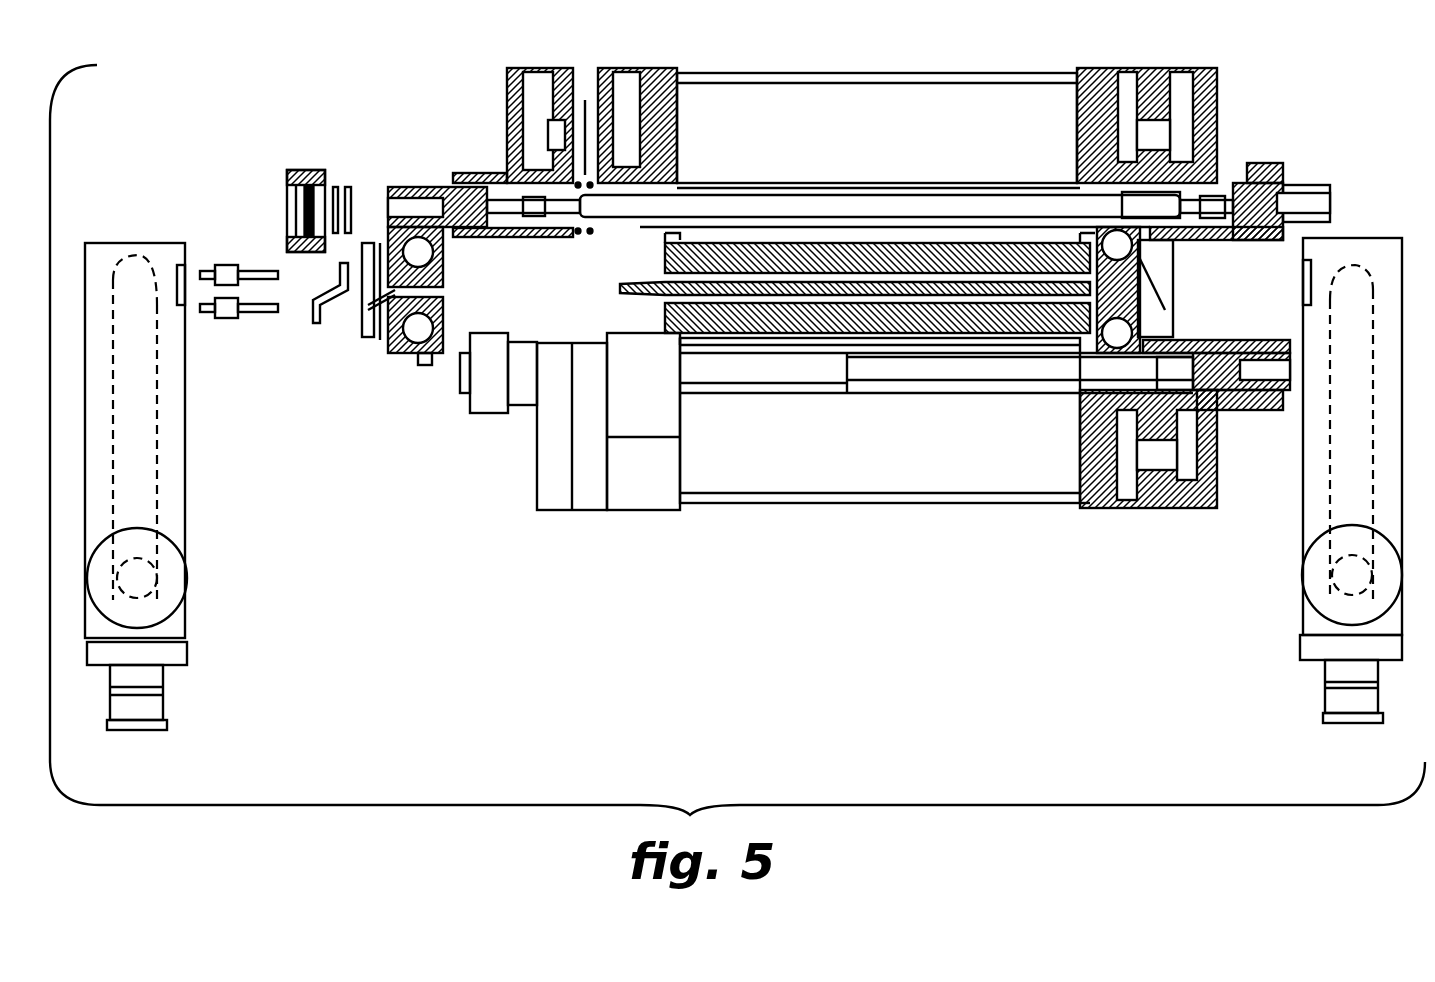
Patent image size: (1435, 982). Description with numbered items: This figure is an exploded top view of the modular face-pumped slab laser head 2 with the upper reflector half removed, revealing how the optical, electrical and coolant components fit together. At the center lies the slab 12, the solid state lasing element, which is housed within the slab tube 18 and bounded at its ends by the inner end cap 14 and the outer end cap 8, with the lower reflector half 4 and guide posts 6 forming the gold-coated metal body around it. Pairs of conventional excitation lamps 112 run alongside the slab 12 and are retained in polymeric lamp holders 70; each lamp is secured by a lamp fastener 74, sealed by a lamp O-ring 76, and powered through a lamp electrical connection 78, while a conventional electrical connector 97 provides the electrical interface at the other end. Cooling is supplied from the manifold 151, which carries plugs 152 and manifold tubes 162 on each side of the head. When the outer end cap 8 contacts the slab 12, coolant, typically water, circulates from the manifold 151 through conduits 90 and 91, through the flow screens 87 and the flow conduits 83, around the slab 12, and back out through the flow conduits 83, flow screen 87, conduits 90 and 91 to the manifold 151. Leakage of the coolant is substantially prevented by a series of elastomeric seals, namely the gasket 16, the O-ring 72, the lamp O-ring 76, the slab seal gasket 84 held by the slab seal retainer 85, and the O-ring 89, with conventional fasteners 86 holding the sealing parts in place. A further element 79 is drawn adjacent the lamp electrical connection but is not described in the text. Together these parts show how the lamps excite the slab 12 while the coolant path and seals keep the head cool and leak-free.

The modular face-pumped slab laser head 2 is at (737, 434).
The lower reflector half 4 is at (880, 488).
The guide posts 6 is at (880, 335).
The outer end cap 8 is at (402, 329).
The slab 12 is at (802, 284).
The inner end cap 14 is at (705, 393).
The gasket 16 is at (832, 284).
The slab tube 18 is at (936, 406).
The lamp holders 70 is at (850, 320).
The O-ring 72 is at (1158, 290).
The lamp fastener 74 is at (275, 173).
The lamp O-ring 76 is at (805, 301).
The lamp electrical connection 78 is at (897, 172).
The shaft sleeve 79 is at (1216, 329).
The flow conduits 83 is at (444, 322).
The slab seal gasket 84 is at (358, 334).
The slab seal retainer 85 is at (316, 337).
The fasteners 86 is at (239, 337).
The flow screens 87 is at (434, 404).
The O-ring 89 is at (590, 134).
The conduit 90 is at (505, 121).
The conduit 91 is at (679, 119).
The electrical connector 97 is at (570, 421).
The excitation lamps 112 is at (860, 301).
The manifold 151 is at (187, 676).
The plugs 152 is at (200, 578).
The manifold tubes 162 is at (209, 440).